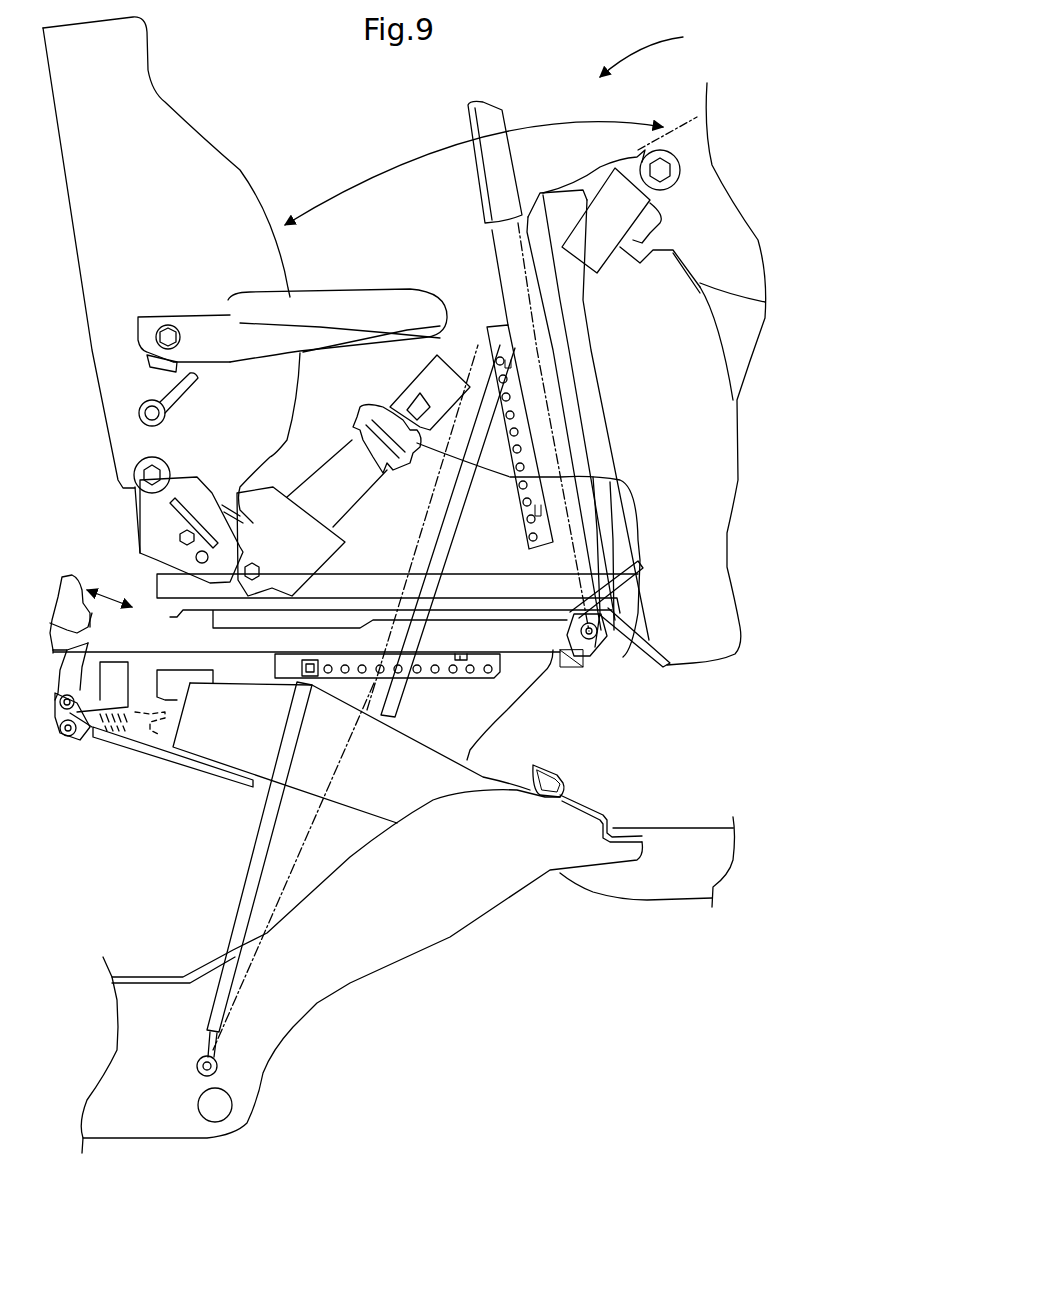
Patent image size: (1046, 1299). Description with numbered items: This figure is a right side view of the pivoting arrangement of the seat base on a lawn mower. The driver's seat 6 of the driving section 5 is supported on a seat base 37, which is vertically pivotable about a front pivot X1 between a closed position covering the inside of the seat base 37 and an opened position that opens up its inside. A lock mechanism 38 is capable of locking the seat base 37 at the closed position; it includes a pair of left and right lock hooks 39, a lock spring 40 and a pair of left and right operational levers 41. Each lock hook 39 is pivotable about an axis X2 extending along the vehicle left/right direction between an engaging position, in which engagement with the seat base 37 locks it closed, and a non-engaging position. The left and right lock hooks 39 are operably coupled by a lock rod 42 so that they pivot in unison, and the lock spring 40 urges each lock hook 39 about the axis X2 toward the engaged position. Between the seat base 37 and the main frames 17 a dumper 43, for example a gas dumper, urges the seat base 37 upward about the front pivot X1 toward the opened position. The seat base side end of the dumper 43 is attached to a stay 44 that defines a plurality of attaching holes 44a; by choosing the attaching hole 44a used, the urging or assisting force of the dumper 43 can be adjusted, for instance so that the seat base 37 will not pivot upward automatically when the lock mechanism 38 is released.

The driving section 5 is at (496, 126).
The driver's seat 6 is at (160, 108).
The main frame 17 is at (350, 983).
The seat base 37 is at (257, 657).
The lock mechanism 38 is at (136, 642).
The lock hook 39 is at (80, 640).
The lock spring 40 is at (133, 727).
The operational lever 41 is at (72, 580).
The lock rod 42 is at (63, 700).
The dumper 43 is at (450, 513).
The stay 44 is at (502, 327).
The attaching hole 44a is at (534, 458).
The front pivot X1 is at (585, 648).
The axis X2 is at (80, 737).